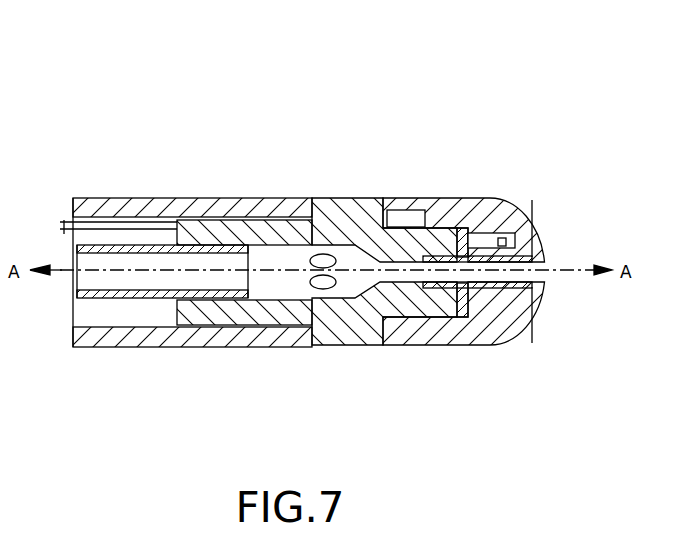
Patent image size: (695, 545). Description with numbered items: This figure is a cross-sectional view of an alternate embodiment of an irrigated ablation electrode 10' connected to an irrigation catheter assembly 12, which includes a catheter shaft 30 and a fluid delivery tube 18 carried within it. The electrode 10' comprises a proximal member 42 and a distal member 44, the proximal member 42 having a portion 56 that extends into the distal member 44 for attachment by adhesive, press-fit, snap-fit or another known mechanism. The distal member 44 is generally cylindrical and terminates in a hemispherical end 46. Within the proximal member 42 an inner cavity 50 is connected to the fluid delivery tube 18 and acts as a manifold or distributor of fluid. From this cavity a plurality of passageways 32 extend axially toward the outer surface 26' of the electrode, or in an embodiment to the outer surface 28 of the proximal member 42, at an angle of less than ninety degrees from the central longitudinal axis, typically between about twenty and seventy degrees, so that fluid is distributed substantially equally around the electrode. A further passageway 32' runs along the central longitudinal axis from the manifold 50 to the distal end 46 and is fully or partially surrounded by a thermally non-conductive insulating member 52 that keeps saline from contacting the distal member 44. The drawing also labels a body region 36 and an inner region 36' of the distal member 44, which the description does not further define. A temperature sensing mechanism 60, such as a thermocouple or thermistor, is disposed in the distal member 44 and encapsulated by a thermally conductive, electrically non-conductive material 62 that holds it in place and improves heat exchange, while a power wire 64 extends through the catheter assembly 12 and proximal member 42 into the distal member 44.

The ablation electrode 10' is at (573, 49).
The irrigation catheter assembly 12 is at (134, 102).
The fluid delivery tube 18 is at (93, 281).
The outer surface of electrode 26' is at (490, 160).
The outer surface of proximal member 28 is at (340, 198).
The catheter shaft 30 is at (147, 348).
The passageways 32 is at (383, 274).
The passageway 32' is at (522, 333).
The housing body 36 is at (464, 237).
The inner housing part 36' is at (515, 271).
The proximal member 42 is at (325, 366).
The distal member 44 is at (508, 172).
The hemispherical end 46 is at (556, 295).
The inner cavity 50 is at (272, 279).
The thermally non-conductive member 52 is at (525, 284).
The portion of proximal member 56 is at (403, 306).
The temperature sensing mechanism 60 is at (506, 242).
The thermally conductive and electrically non-conductive material 62 is at (508, 232).
The power wire 64 is at (412, 221).